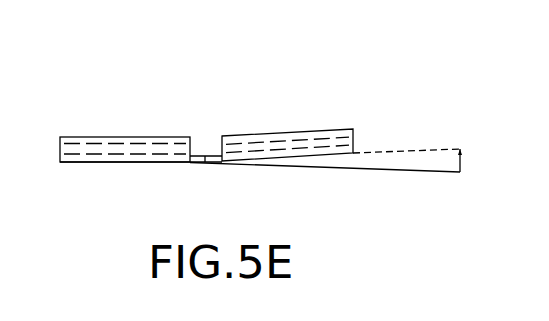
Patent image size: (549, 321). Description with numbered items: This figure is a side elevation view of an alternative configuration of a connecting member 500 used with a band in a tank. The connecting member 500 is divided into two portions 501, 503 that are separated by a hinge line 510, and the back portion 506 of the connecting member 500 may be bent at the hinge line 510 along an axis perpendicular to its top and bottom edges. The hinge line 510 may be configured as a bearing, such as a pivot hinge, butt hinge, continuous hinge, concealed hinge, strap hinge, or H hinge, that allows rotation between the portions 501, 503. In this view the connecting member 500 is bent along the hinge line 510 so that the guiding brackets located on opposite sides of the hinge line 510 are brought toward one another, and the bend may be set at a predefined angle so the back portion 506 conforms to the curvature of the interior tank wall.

The connecting member 500 is at (355, 143).
The portion of the connecting member 501 is at (90, 136).
The portion of the connecting member 503 is at (288, 132).
The back portion 506 is at (115, 163).
The hinge line 510 is at (205, 156).